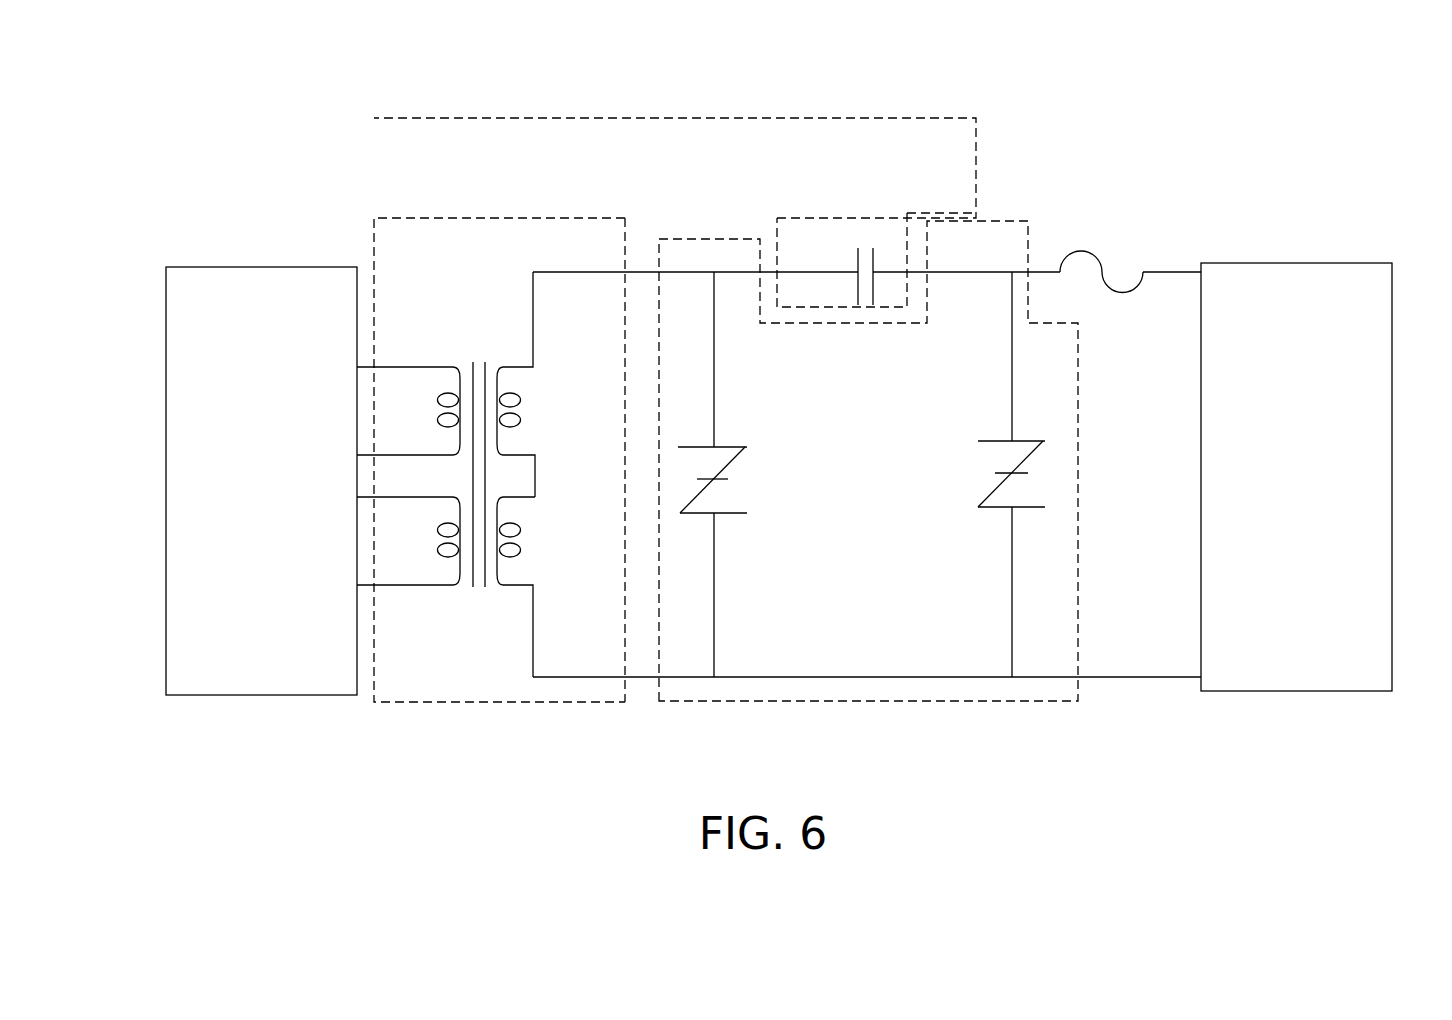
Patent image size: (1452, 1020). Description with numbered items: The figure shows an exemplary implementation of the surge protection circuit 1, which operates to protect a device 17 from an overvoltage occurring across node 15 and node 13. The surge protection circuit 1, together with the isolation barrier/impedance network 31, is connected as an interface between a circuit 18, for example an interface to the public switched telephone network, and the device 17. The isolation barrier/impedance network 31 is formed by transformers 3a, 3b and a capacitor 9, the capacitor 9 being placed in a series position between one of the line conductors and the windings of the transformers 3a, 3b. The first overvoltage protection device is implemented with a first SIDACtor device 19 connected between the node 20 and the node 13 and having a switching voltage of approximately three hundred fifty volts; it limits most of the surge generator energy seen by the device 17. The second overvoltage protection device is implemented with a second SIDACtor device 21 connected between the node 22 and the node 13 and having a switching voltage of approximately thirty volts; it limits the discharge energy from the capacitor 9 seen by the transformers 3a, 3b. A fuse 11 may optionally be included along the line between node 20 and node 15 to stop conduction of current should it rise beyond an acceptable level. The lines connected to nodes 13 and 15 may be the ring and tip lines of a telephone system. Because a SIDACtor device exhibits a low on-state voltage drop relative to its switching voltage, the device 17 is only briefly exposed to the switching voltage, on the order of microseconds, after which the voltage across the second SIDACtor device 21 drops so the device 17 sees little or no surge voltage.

The surge protection circuit 1 is at (996, 214).
The transformer 3a is at (446, 419).
The transformer 3b is at (446, 594).
The capacitor 9 is at (863, 234).
The fuse 11 is at (1125, 228).
The node 13 is at (867, 727).
The node 15 is at (1195, 221).
The device 17 is at (261, 433).
The circuit 18 is at (1308, 429).
The first SIDACtor device 19 is at (1057, 474).
The node 20 is at (1033, 220).
The second SIDACtor device 21 is at (759, 474).
The node 22 is at (652, 430).
The isolation barrier/impedance network 31 is at (874, 114).